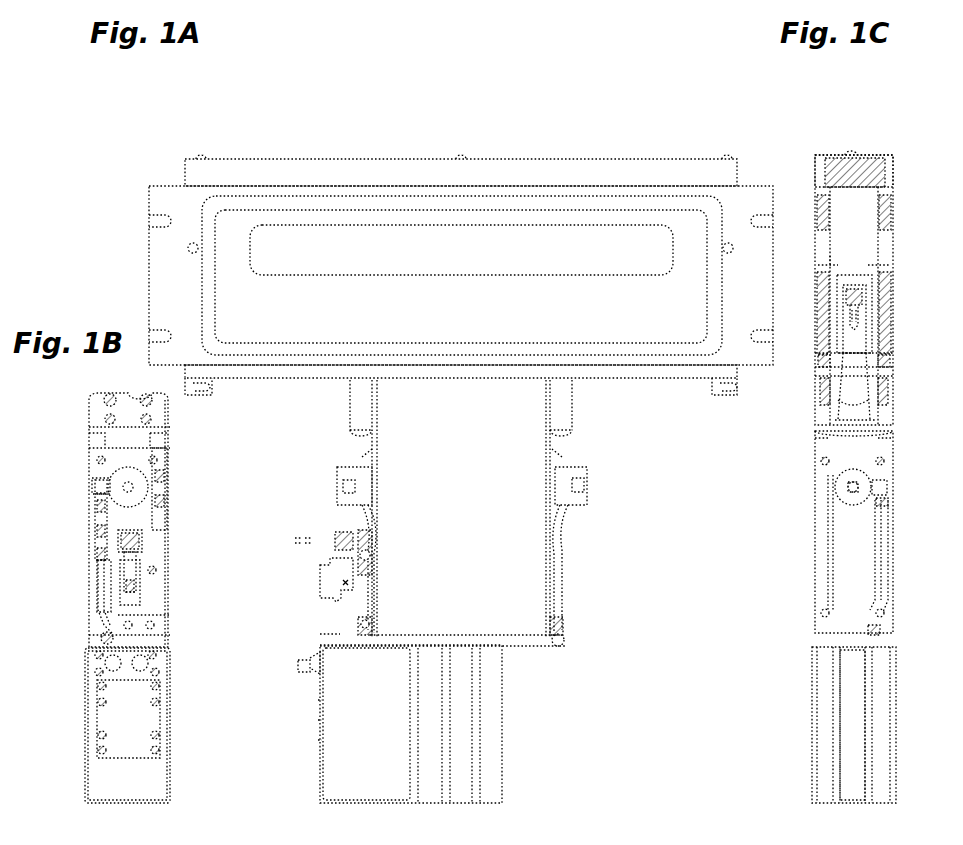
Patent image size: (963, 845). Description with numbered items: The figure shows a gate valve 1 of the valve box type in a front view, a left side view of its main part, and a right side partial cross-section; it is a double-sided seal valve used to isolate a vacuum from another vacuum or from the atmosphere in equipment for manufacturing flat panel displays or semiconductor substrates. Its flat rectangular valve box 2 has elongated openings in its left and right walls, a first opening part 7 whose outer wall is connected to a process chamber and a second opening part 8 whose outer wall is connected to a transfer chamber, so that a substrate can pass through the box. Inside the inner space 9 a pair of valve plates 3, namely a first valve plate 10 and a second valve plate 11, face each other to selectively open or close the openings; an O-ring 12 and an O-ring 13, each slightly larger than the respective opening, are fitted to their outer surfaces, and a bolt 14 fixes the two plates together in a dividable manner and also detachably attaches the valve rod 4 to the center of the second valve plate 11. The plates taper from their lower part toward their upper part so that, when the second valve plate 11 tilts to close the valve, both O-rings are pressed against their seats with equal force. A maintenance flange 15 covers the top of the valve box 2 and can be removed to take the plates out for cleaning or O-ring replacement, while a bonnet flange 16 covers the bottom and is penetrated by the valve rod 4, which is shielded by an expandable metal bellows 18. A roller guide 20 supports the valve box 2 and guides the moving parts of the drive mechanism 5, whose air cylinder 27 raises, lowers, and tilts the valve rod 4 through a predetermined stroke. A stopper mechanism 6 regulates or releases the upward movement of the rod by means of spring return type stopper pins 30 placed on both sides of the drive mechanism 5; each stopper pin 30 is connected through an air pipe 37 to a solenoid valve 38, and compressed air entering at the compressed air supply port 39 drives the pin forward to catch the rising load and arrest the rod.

In FIG. 1A, the gate valve 1 is at (697, 152).
In FIG. 1C, the gate valve 1 is at (899, 150).
In FIG. 1A, the valve box 2 is at (149, 279).
In FIG. 1C, the valve box 2 is at (815, 204).
In FIG. 1C, the valve plates 3 is at (854, 272).
In FIG. 1C, the valve rod 4 is at (818, 366).
In FIG. 1A, the drive mechanism 5 is at (300, 723).
In FIG. 1B, the drive mechanism 5 is at (172, 691).
In FIG. 1C, the drive mechanism 5 is at (792, 724).
In FIG. 1A, the stopper mechanism 6 is at (337, 468).
In FIG. 1B, the stopper mechanism 6 is at (172, 460).
In FIG. 1C, the stopper mechanism 6 is at (812, 460).
In FIG. 1A, the first opening part 7 is at (588, 270).
In FIG. 1C, the first opening part 7 is at (888, 230).
In FIG. 1C, the second opening part 8 is at (820, 232).
In FIG. 1C, the inner space 9 is at (868, 168).
In FIG. 1C, the first valve plate 10 is at (868, 265).
In FIG. 1C, the second valve plate 11 is at (830, 265).
In FIG. 1A, the O-ring 12 is at (400, 196).
In FIG. 1C, the O-ring 12 is at (880, 350).
In FIG. 1C, the O-ring 13 is at (817, 343).
In FIG. 1C, the bolt 14 is at (872, 298).
In FIG. 1A, the maintenance flange 15 is at (315, 158).
In FIG. 1C, the maintenance flange 15 is at (833, 158).
In FIG. 1A, the bonnet flange 16 is at (655, 380).
In FIG. 1C, the bonnet flange 16 is at (818, 386).
In FIG. 1C, the metal bellows 18 is at (890, 390).
In FIG. 1A, the roller guide 20 is at (553, 420).
In FIG. 1A, the air cylinder 27 is at (318, 760).
In FIG. 1B, the air cylinder 27 is at (165, 735).
In FIG. 1C, the air cylinder 27 is at (812, 762).
In FIG. 1A, the stopper pins 30 is at (343, 487).
In FIG. 1B, the stopper pins 30 is at (135, 487).
In FIG. 1C, the stopper pins 30 is at (848, 487).
In FIG. 1A, the air pipe 37 is at (352, 516).
In FIG. 1B, the air pipe 37 is at (96, 524).
In FIG. 1C, the air pipe 37 is at (888, 558).
In FIG. 1A, the solenoid valve 38 is at (320, 575).
In FIG. 1B, the compressed air supply port 39 is at (95, 484).
In FIG. 1C, the compressed air supply port 39 is at (887, 476).